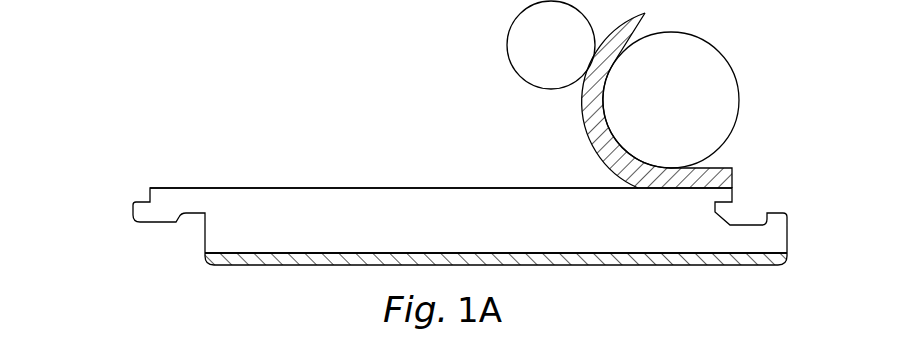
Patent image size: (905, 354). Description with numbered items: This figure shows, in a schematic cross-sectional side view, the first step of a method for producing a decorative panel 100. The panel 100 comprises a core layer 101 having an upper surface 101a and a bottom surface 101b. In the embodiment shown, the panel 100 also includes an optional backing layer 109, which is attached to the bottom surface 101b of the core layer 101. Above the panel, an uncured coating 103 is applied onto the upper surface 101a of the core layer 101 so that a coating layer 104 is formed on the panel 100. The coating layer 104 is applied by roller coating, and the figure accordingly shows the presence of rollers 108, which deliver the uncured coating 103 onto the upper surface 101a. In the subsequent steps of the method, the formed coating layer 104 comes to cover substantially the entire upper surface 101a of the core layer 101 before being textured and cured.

The decorative panel 100 is at (128, 171).
The core layer 101 is at (479, 232).
The upper surface 101a is at (338, 187).
The bottom surface 101b is at (298, 254).
The uncured coating 103 is at (583, 108).
The coating layer 104 is at (735, 177).
The rollers 108 is at (517, 42).
The backing layer 109 is at (723, 258).